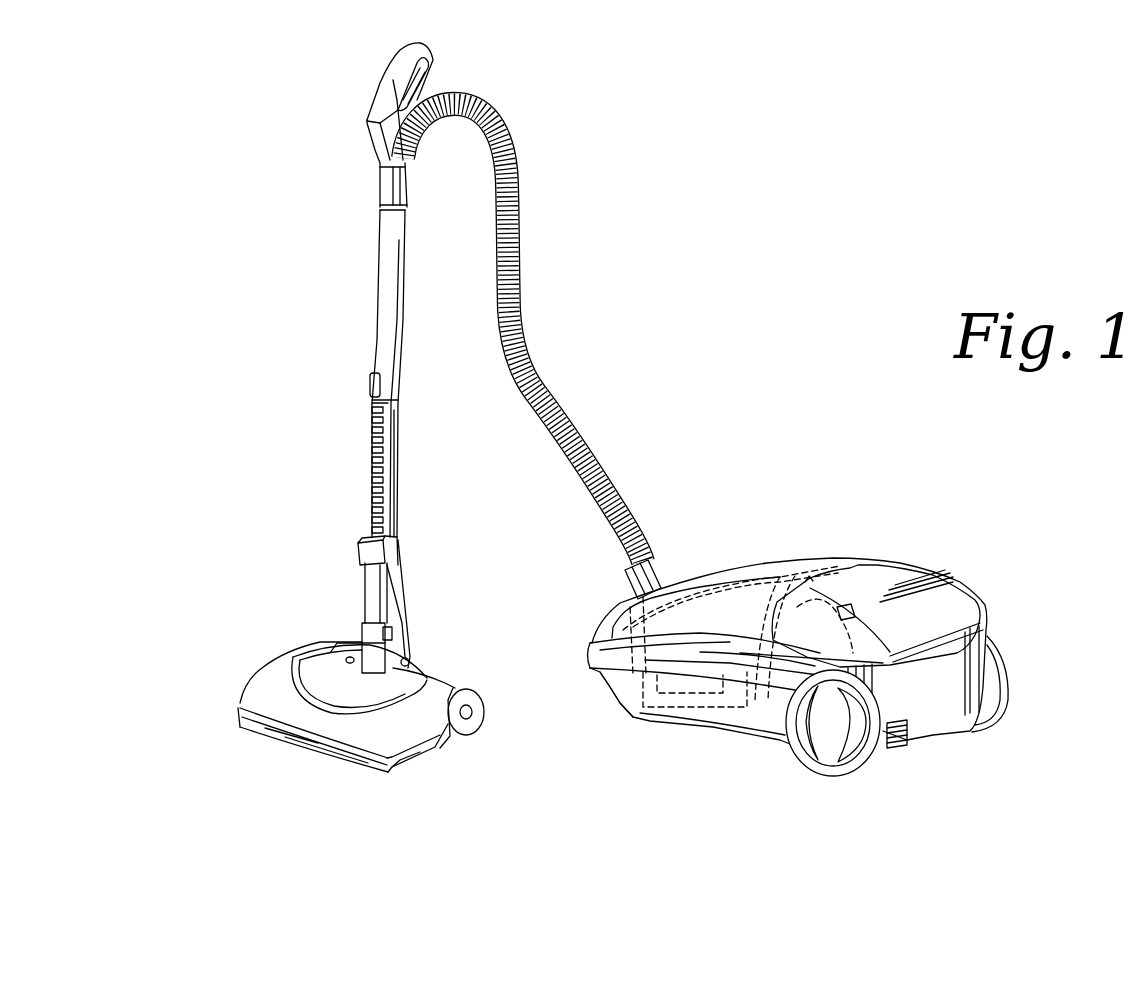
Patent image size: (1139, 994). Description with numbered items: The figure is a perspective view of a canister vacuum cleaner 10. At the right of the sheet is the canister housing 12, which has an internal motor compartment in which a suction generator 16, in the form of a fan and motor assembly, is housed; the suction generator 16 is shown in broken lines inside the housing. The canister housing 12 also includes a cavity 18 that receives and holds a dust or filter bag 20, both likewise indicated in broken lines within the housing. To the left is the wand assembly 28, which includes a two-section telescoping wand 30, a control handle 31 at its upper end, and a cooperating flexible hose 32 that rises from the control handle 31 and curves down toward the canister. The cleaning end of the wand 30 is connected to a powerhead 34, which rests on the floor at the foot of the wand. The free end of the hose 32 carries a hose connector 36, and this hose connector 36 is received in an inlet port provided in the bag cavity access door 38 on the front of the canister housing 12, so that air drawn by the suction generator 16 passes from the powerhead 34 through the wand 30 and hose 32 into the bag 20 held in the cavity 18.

The vacuum cleaner 10 is at (833, 233).
The canister housing 12 is at (973, 583).
The suction generator 16 is at (737, 671).
The cavity 18 is at (640, 673).
The dust or filter bag 20 is at (728, 582).
The wand assembly 28 is at (283, 336).
The telescoping wand 30 is at (404, 338).
The control handle 31 is at (369, 146).
The flexible hose 32 is at (519, 277).
The powerhead 34 is at (258, 667).
The hose connector 36 is at (650, 588).
The bag cavity access door 38 is at (693, 582).